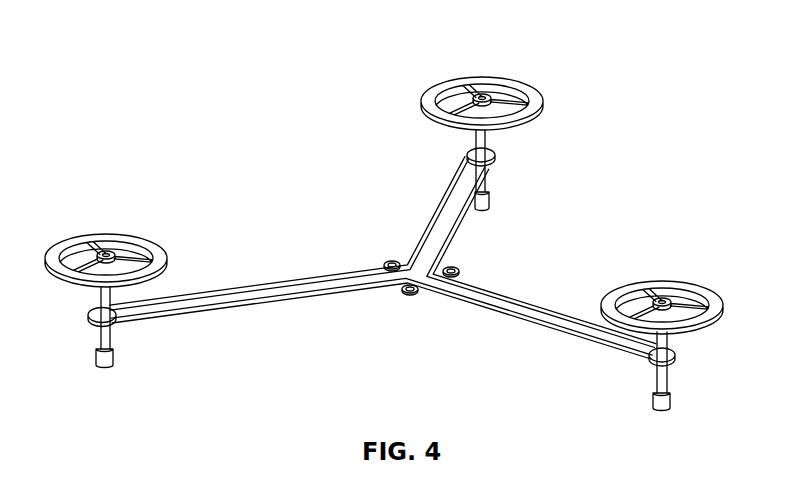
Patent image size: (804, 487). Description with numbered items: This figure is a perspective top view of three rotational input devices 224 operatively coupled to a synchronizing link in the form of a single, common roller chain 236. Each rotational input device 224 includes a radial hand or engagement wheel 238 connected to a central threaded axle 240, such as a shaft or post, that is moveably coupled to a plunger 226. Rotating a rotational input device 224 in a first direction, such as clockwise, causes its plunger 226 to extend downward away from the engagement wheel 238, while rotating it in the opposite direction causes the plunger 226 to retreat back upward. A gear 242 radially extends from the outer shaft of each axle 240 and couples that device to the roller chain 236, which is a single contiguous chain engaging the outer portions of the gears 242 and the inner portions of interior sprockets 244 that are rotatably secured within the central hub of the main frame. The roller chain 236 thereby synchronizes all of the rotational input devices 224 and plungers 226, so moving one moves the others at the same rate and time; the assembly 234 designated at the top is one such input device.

The rotational input device 224 is at (128, 230).
The wheel assembly 234 is at (517, 75).
The engagement wheel 238 is at (543, 104).
The central threaded axle 240 is at (102, 297).
The gear 242 is at (112, 313).
The plunger 226 is at (113, 353).
The roller chain 236 is at (540, 305).
The interior sprocket 244 is at (393, 261).